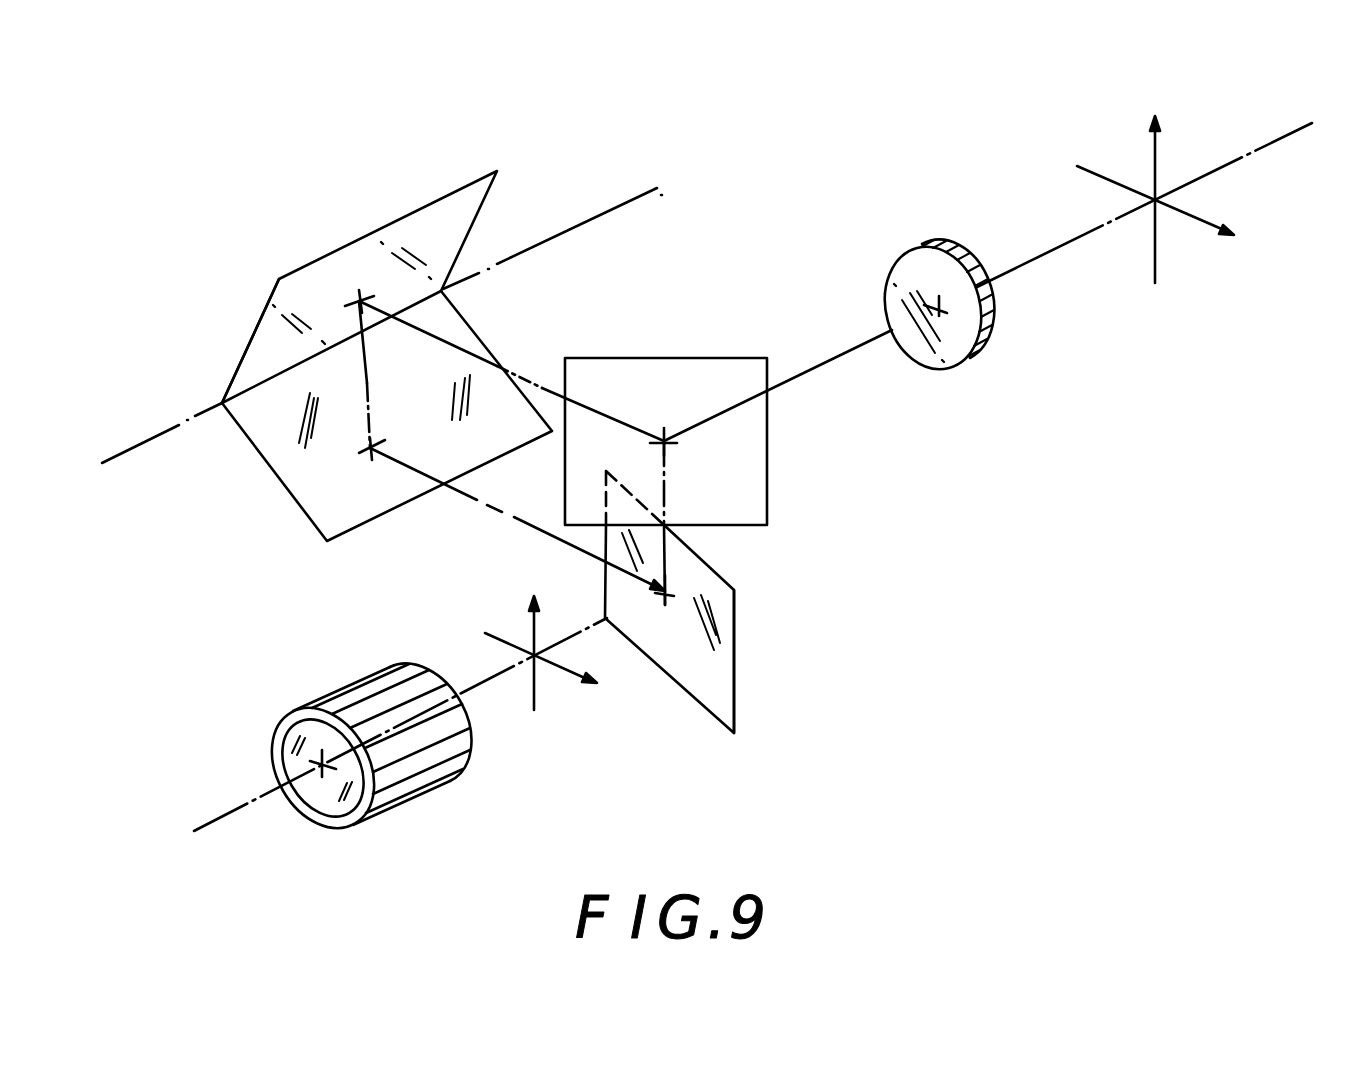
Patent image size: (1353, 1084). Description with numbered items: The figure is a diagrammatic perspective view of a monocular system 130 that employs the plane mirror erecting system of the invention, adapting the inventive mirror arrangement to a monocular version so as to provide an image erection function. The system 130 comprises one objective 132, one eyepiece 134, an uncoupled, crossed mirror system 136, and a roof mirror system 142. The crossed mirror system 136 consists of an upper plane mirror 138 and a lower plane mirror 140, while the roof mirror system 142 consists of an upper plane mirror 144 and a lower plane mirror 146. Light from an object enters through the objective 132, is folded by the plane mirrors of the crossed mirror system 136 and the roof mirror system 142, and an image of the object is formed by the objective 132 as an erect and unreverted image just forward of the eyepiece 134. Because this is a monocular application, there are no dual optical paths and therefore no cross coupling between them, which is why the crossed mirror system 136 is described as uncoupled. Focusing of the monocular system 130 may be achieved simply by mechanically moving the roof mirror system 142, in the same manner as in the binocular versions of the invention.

The monocular system 130 is at (734, 222).
The objective 132 is at (970, 363).
The eyepiece 134 is at (407, 788).
The uncoupled, crossed mirror system 136 is at (731, 578).
The upper plane mirror 138 is at (765, 463).
The lower plane mirror 140 is at (732, 708).
The roof mirror system 142 is at (468, 231).
The upper plane mirror 144 is at (297, 285).
The lower plane mirror 146 is at (305, 463).